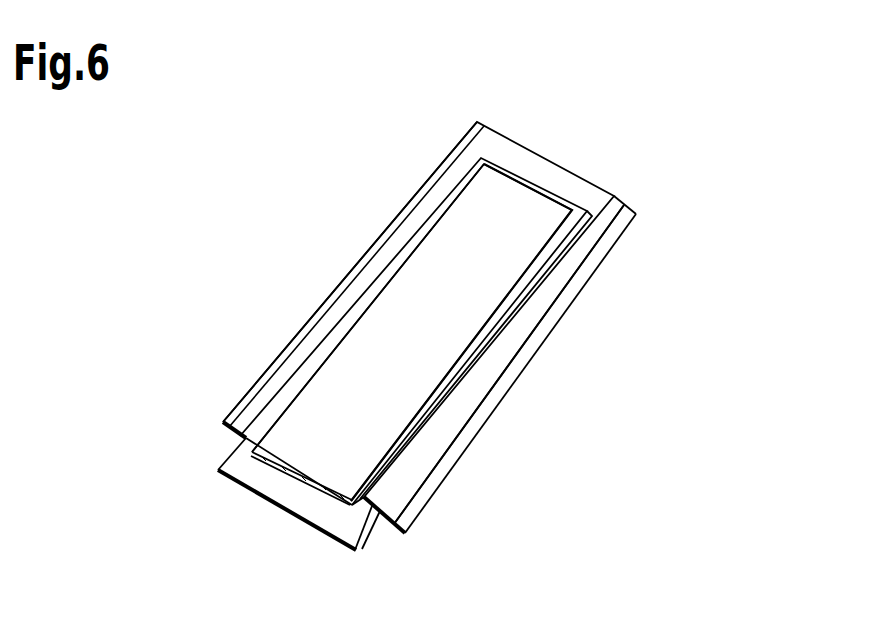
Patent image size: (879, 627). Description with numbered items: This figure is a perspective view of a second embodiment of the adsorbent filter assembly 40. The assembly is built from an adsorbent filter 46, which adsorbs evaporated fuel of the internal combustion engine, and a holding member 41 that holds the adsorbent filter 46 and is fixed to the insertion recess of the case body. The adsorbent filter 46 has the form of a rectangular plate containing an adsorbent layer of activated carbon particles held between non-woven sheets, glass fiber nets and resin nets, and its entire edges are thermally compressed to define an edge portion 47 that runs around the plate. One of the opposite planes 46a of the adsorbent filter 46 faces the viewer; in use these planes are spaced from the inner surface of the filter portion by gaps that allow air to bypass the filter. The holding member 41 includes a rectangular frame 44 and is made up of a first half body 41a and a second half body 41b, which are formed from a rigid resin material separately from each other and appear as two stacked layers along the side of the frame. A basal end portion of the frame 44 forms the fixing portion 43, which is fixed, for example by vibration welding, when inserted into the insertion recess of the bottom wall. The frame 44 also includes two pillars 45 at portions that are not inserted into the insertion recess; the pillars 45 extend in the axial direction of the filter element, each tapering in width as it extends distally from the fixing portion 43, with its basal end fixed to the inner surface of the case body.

The adsorbent filter assembly 40 is at (305, 200).
The holding member 41 is at (730, 141).
The first half body 41a is at (623, 195).
The second half body 41b is at (636, 208).
The fixing portion 43 is at (280, 490).
The frame 44 is at (551, 178).
The pillar 45 is at (340, 287).
The adsorbent filter 46 is at (423, 275).
The plane 46a is at (327, 386).
The edge portion 47 is at (513, 180).